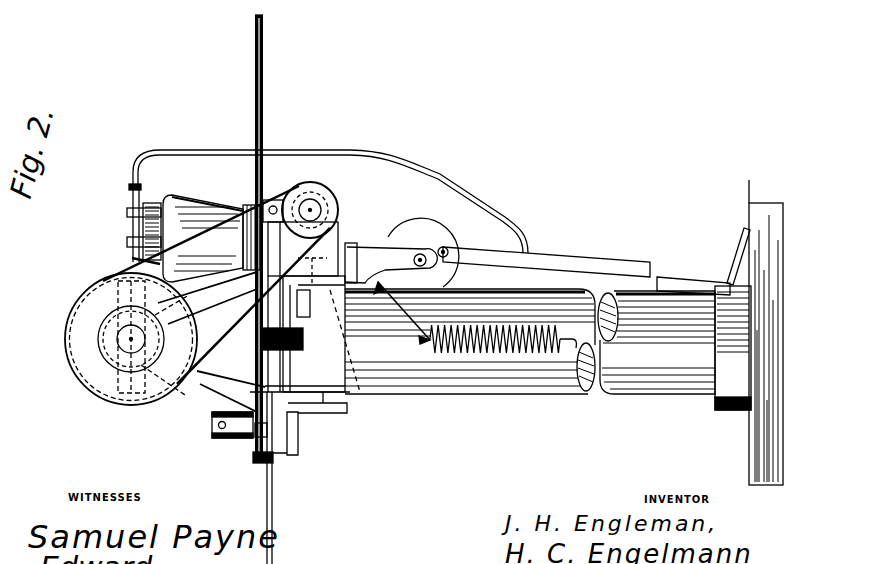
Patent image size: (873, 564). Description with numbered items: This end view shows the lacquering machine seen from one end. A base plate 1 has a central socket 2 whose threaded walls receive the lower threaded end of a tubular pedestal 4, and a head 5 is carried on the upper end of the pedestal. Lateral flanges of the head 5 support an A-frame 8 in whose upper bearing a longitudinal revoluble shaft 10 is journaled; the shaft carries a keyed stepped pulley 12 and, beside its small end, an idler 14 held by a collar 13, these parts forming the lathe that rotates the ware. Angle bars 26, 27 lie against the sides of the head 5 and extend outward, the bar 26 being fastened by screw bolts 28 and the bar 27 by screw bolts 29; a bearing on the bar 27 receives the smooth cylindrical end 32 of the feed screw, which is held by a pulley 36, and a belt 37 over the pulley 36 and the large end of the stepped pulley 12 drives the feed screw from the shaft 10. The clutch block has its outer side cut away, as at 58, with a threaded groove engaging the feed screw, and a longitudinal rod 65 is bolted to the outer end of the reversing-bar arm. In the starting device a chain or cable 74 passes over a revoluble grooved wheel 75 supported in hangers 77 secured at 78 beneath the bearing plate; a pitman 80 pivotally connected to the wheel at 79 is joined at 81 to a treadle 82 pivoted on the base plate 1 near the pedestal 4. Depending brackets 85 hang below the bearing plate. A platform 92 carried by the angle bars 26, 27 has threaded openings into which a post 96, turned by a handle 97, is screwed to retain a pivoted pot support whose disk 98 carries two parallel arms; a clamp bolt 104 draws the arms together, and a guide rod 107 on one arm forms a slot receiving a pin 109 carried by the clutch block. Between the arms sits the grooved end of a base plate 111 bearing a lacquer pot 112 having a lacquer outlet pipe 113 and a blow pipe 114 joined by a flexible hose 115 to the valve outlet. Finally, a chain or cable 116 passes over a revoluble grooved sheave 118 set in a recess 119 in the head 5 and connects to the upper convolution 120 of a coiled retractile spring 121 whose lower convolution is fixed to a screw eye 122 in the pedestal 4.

The base plate 1 is at (766, 332).
The central socket 2 is at (729, 370).
The tubular pedestal 4 is at (550, 289).
The head 5 is at (322, 395).
The A-frame 8 is at (197, 385).
The longitudinal revoluble shaft 10 is at (127, 333).
The stepped pulley 12 is at (78, 298).
The collar 13 is at (98, 352).
The idler 14 is at (96, 372).
The angle bar 26 is at (318, 414).
The angle bar 27 is at (365, 210).
The screw bolts 28 is at (258, 437).
The screw bolts 29 is at (378, 395).
The smooth cylindrical end 32 is at (345, 205).
The pulley 36 is at (338, 200).
The belt 37 is at (203, 200).
The cut away portion 58 is at (315, 182).
The longitudinal rod 65 is at (280, 200).
The chain or cable 74 is at (447, 395).
The revoluble circumferentially grooved wheel 75 is at (423, 230).
The hangers 77 is at (388, 225).
The hanger securing point 78 is at (369, 252).
The pivotal connection 79 is at (455, 245).
The pitman 80 is at (504, 250).
The pitman connection 81 is at (713, 287).
The treadle 82 is at (743, 238).
The depending brackets 85 is at (424, 255).
The platform 92 is at (300, 456).
The post 96 is at (212, 427).
The handle 97 is at (214, 437).
The disk 98 is at (262, 463).
The bolt 104 is at (255, 40).
The longitudinal guide rod 107 is at (263, 72).
The pin 109 is at (251, 205).
The base plate 111 is at (238, 208).
The lacquer pot 112 is at (172, 195).
The lacquer outlet pipe 113 is at (130, 212).
The blow pipe 114 is at (130, 190).
The flexible connection or hose 115 is at (463, 186).
The chain or cable 116 is at (407, 395).
The revoluble grooved sheave 118 is at (312, 414).
The recess 119 is at (345, 380).
The upper convolution 120 is at (460, 372).
The coiled retractile spring 121 is at (558, 345).
The screw eye 122 is at (569, 348).